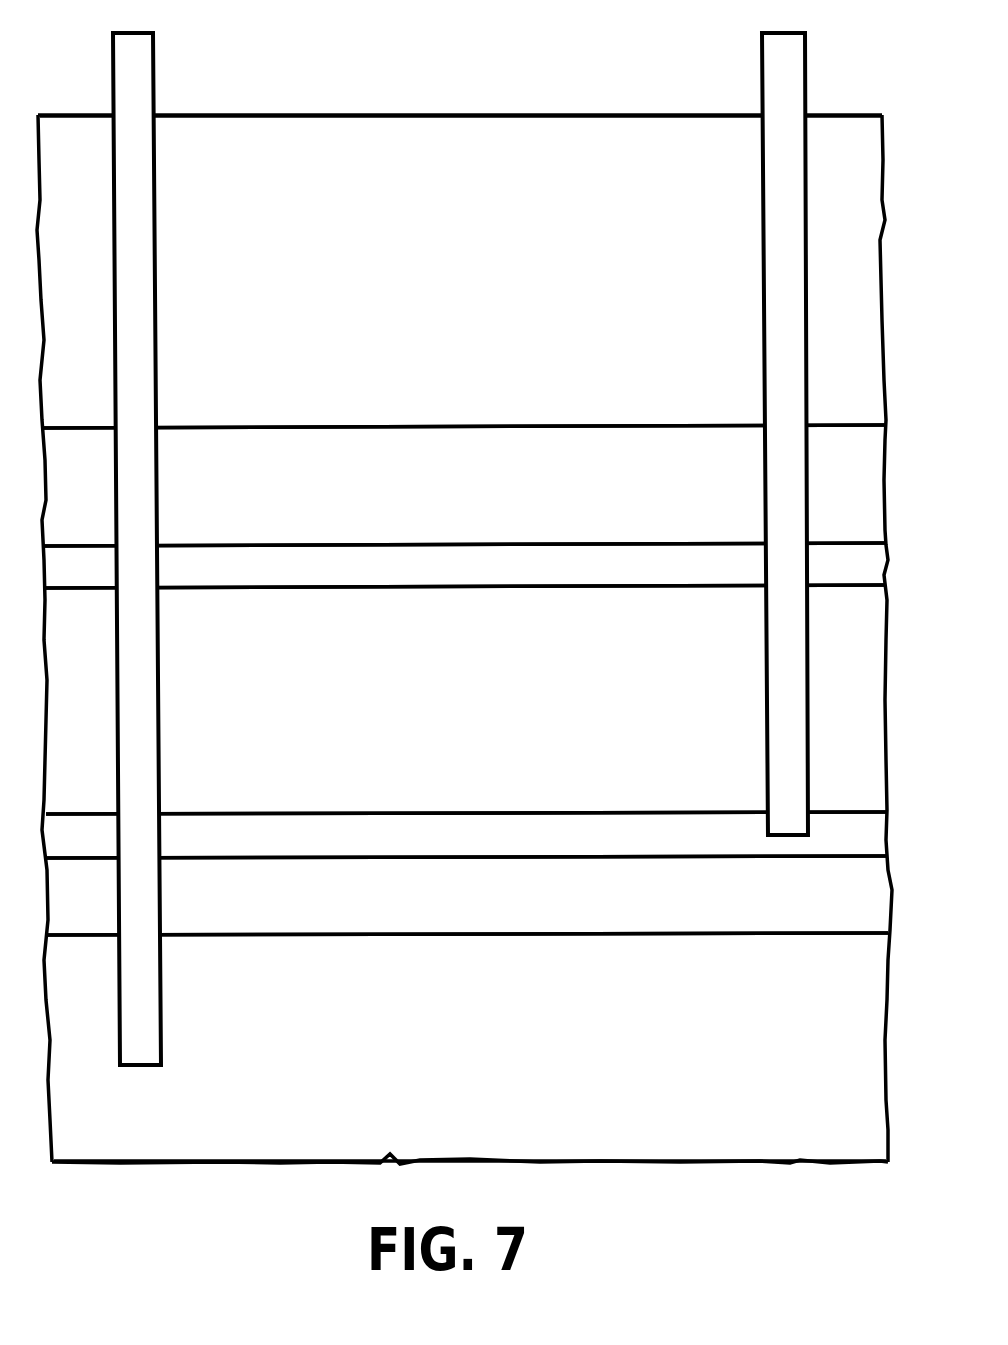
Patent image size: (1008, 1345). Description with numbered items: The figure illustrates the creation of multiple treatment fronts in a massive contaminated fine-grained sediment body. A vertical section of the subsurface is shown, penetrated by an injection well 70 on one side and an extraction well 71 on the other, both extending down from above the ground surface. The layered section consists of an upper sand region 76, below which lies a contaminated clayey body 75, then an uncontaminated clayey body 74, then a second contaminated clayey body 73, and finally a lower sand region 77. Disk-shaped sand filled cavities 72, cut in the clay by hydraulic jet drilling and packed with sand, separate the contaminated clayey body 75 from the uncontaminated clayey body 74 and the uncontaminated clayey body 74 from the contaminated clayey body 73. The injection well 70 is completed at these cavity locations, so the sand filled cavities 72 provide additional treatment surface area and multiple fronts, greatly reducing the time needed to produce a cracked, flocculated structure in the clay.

The injection well 70 is at (762, 67).
The extraction well 71 is at (153, 55).
The sand filled cavities 72 is at (236, 583).
The contaminated clayey body 73 is at (236, 906).
The uncontaminated clayey body 74 is at (258, 668).
The contaminated clayey body 75 is at (270, 481).
The sand region 76 is at (298, 228).
The sand region 77 is at (370, 1062).